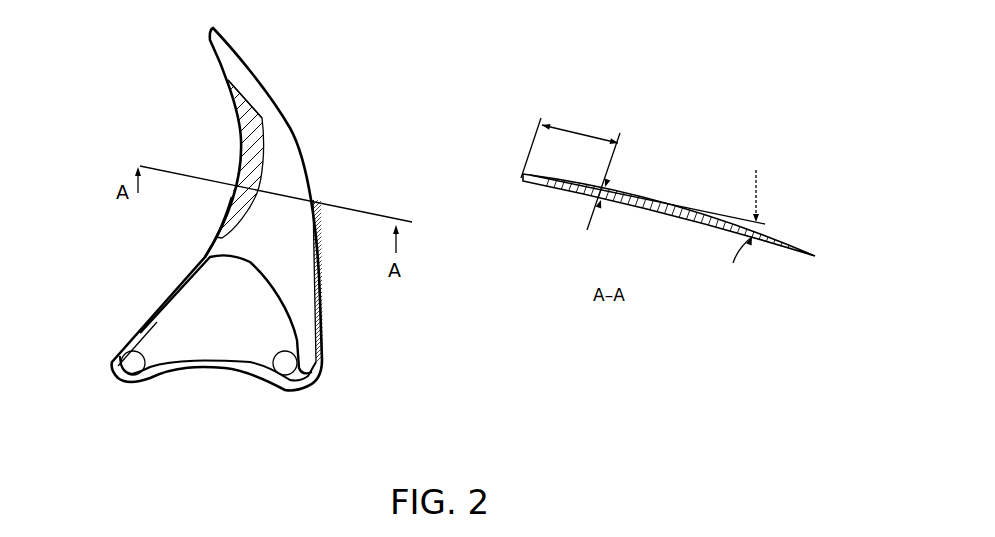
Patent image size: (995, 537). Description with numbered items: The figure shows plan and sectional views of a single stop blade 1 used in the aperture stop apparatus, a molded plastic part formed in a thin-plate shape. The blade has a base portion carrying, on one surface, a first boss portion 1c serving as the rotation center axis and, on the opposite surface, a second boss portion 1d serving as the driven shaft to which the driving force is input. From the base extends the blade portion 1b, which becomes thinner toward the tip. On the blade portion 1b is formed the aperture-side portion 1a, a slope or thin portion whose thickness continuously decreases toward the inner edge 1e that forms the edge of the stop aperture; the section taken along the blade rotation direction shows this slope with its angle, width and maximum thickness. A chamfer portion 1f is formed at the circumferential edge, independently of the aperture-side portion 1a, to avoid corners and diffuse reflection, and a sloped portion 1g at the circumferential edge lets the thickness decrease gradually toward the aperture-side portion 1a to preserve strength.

The stop blade 1 is at (280, 100).
The aperture-side portion 1a is at (240, 154).
The blade portion 1b is at (285, 242).
The first boss portion 1c is at (124, 358).
The second boss portion 1d is at (308, 380).
The inner edge 1e is at (217, 222).
The chamfer portion 1f is at (208, 44).
The sloped portion 1g is at (236, 101).